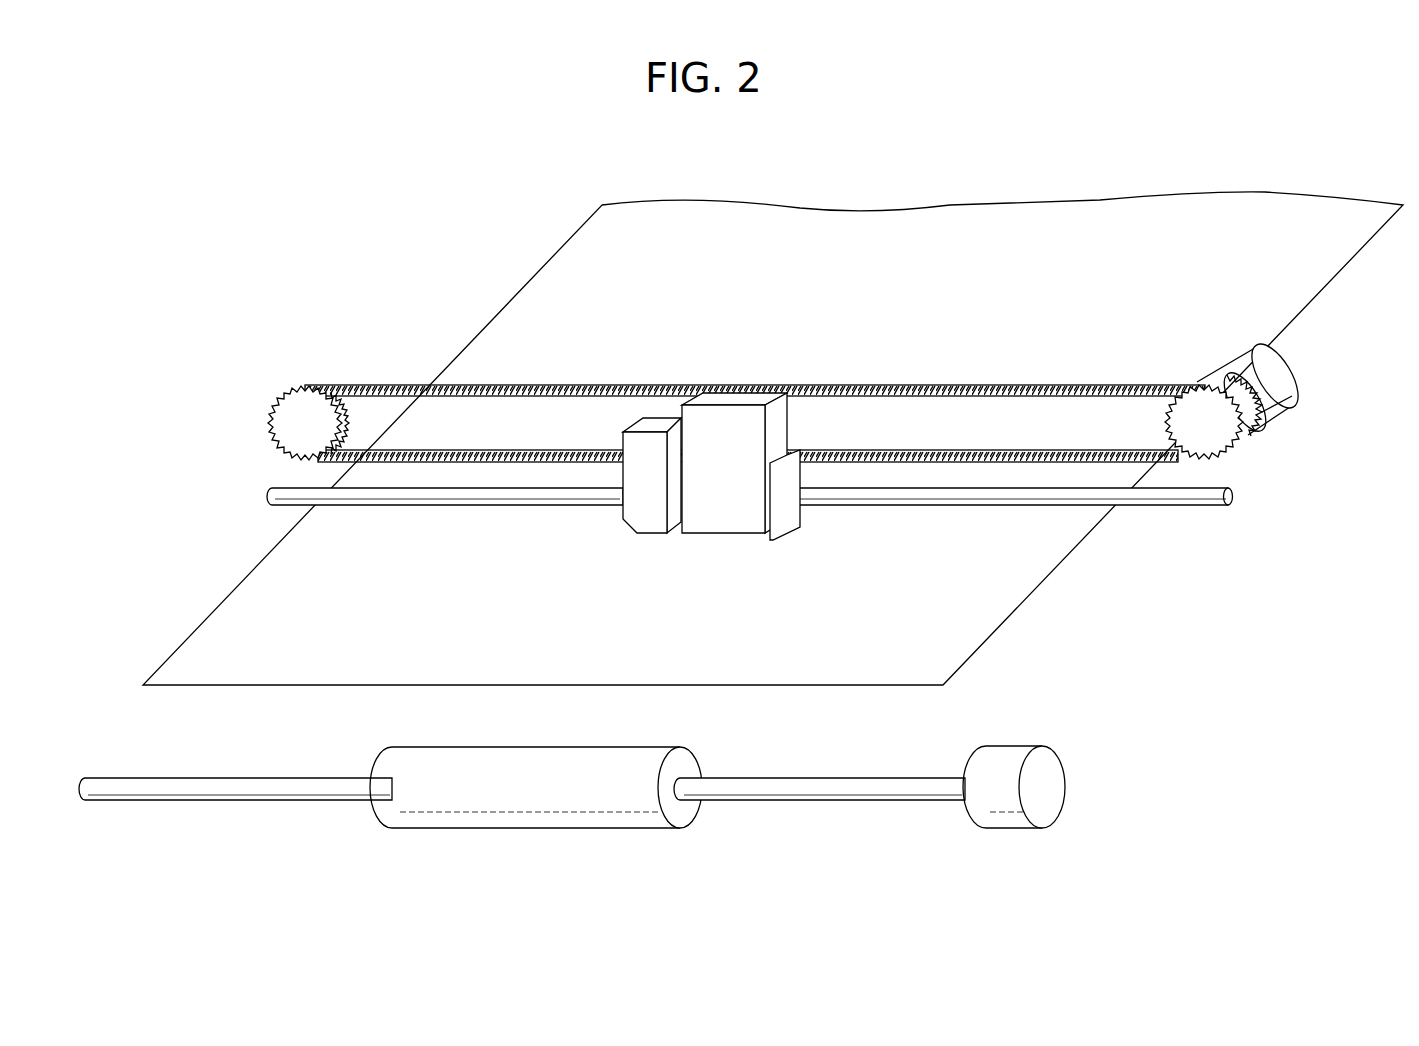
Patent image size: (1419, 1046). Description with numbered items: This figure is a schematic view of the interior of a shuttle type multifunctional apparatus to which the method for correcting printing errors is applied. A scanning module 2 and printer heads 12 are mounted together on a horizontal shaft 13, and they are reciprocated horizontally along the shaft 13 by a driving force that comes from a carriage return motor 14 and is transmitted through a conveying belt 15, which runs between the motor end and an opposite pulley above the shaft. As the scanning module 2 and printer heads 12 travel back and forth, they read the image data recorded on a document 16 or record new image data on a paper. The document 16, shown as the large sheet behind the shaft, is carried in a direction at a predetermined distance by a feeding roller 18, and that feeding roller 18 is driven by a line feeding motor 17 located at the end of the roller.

The scanning module 2 is at (636, 522).
The printer heads 12 is at (736, 522).
The horizontal shaft 13 is at (272, 498).
The carriage return motor 14 is at (1282, 421).
The conveying belt 15 is at (378, 384).
The document 16 is at (565, 305).
The line feeding motor 17 is at (1042, 808).
The feeding roller 18 is at (530, 798).